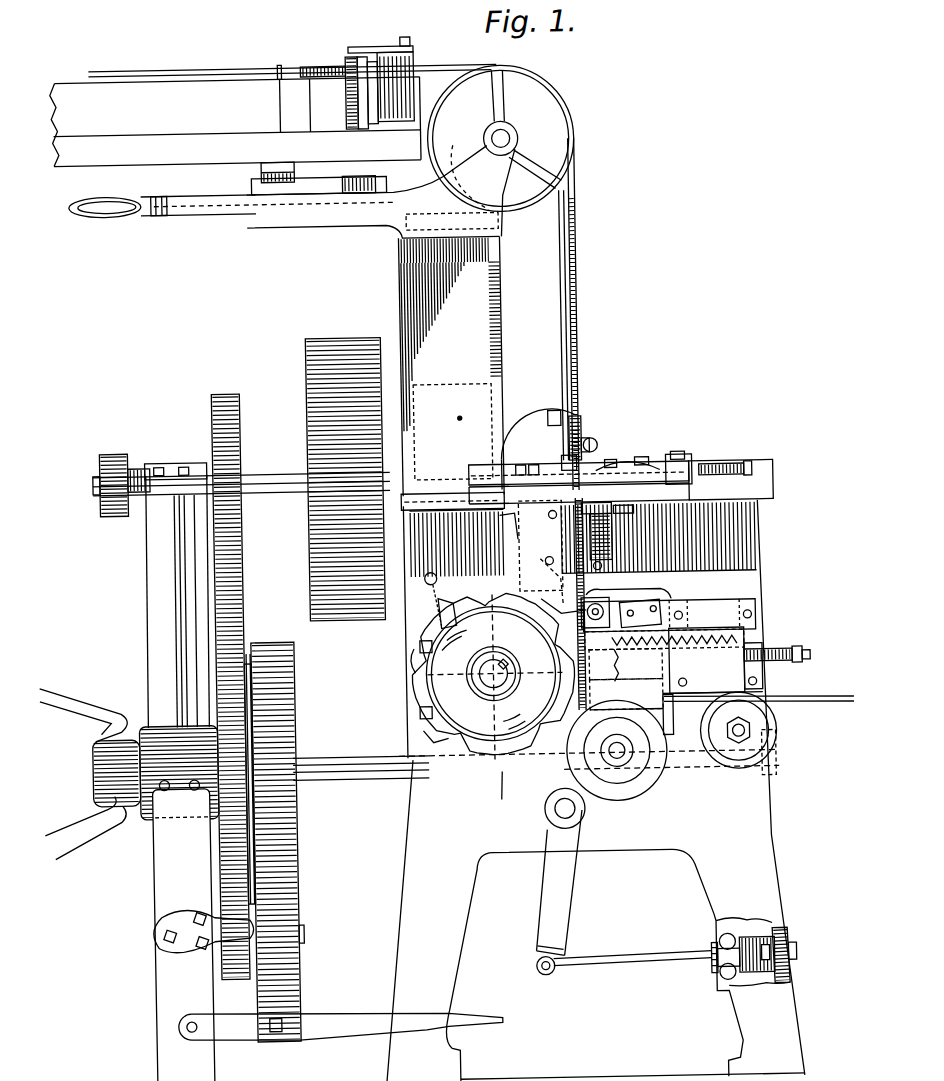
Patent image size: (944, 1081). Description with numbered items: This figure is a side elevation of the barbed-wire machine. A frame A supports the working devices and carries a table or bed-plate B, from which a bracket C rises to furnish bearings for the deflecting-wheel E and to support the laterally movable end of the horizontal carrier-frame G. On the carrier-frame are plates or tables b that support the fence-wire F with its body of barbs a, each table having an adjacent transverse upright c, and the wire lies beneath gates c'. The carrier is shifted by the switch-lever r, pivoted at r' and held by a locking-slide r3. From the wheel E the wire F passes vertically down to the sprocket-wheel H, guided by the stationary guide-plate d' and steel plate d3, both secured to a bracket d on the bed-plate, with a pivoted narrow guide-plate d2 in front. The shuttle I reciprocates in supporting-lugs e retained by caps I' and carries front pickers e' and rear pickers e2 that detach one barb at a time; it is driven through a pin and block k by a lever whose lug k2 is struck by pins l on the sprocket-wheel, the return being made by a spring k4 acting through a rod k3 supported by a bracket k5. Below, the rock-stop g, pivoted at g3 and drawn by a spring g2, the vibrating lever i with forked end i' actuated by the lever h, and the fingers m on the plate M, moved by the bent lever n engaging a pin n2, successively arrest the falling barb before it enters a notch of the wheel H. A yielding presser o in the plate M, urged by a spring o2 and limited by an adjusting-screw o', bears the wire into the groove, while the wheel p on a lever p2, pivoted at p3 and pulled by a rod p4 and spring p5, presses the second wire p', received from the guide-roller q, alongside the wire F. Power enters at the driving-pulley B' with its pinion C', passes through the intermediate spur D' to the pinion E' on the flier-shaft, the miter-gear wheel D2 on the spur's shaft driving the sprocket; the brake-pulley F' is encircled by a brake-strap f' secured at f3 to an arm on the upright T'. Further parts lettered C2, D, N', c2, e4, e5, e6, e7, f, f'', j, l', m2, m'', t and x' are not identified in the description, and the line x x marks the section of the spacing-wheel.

The frame A is at (590, 790).
The table or bed-plate B is at (603, 509).
The driving-pulley B' is at (345, 479).
The bracket C is at (451, 366).
The pinion C' is at (249, 687).
The shaft C2 is at (283, 490).
The arm D is at (381, 193).
The intermediate spur D' is at (295, 779).
The miter-gear wheel D2 is at (368, 783).
The deflecting-wheel E is at (513, 136).
The pinion E' is at (294, 783).
The fence-wire F is at (352, 264).
The brake-pulley F' is at (299, 841).
The carrier-frame G is at (237, 126).
The sprocket-wheel H is at (488, 684).
The shuttle I is at (578, 457).
The caps I' is at (695, 425).
The plate M is at (669, 614).
The fork frame N' is at (130, 772).
The upright T' is at (203, 943).
The body of barbs a is at (288, 64).
The plates or tables b is at (208, 77).
The transverse upright c is at (364, 91).
The gates c' is at (380, 38).
The clamp nut c2 is at (405, 46).
The bracket d is at (538, 424).
The guide-plate d' is at (593, 324).
The second narrow guide-plate d2 is at (598, 445).
The steel guide-plate d3 is at (564, 447).
The supporting-lugs e is at (564, 465).
The front pickers e' is at (627, 446).
The rear pickers or supports e2 is at (518, 470).
The stop e4 is at (535, 468).
The block e5 is at (642, 456).
The block e6 is at (612, 462).
The screw e7 is at (722, 467).
The pin f is at (641, 520).
The brake-strap f' is at (309, 922).
The brake-strap attachment f3 is at (180, 926).
The lever f'' is at (340, 1014).
The rock-stop g is at (532, 545).
The contractile spring g2 is at (600, 548).
The pivot g3 is at (596, 530).
The lever h is at (524, 599).
The vibrating lever i is at (555, 619).
The forked lower end i' is at (569, 605).
The pawl j is at (393, 740).
The pin and block k is at (560, 478).
The lug k2 is at (500, 516).
The rod k3 is at (742, 640).
The spring k4 is at (712, 660).
The bracket k5 is at (683, 714).
The pins l is at (459, 683).
The spring l' is at (421, 647).
The fingers m is at (626, 664).
The slide m2 is at (626, 690).
The plate m'' is at (640, 613).
The bent lever n is at (665, 647).
The pin n2 is at (600, 600).
The yielding presser o is at (768, 670).
The adjusting-screw o' is at (812, 640).
The spring o2 is at (802, 664).
The wheel p is at (589, 764).
The second wire p' is at (759, 708).
The lever p2 is at (560, 883).
The pivot p3 is at (555, 815).
The rod p4 is at (615, 967).
The spring p5 is at (707, 970).
The guide-roller q is at (722, 752).
The shifting-lever r is at (232, 223).
The pivot r' is at (325, 178).
The locking-slide r3 is at (172, 212).
The bolt t is at (425, 585).
The section line x is at (548, 424).
The rod x' is at (496, 800).